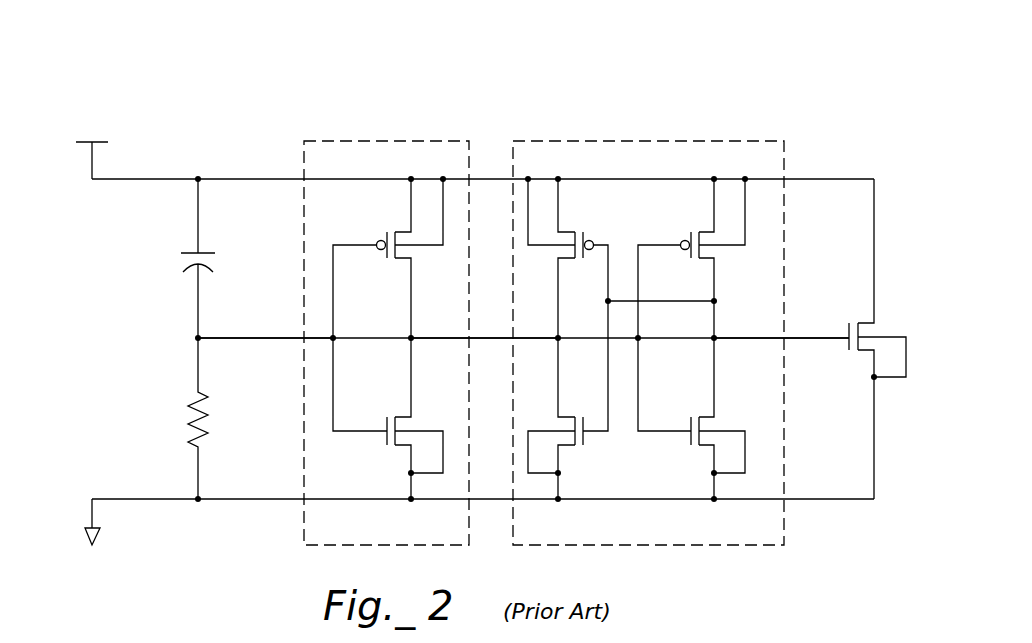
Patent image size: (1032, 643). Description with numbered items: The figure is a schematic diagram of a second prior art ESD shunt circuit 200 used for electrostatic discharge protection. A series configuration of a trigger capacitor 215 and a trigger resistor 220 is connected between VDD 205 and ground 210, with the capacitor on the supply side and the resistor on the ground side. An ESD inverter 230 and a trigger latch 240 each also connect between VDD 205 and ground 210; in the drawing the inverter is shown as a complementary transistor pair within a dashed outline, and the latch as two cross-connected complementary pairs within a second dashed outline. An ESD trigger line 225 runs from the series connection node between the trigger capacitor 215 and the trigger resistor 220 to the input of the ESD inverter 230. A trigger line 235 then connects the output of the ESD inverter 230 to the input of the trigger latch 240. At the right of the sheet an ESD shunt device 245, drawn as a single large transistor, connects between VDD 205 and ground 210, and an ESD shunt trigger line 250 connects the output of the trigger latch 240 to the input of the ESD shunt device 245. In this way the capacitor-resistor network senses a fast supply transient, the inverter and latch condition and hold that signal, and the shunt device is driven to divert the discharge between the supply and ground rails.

The second prior art ESD shunt circuit 200 is at (578, 92).
The VDD 205 is at (108, 142).
The ground 210 is at (92, 519).
The trigger capacitor 215 is at (212, 264).
The trigger resistor 220 is at (210, 413).
The ESD trigger line 225 is at (240, 338).
The ESD inverter 230 is at (442, 141).
The trigger line 235 is at (493, 338).
The trigger latch 240 is at (757, 141).
The ESD shunt device 245 is at (846, 350).
The ESD shunt trigger line 250 is at (805, 338).